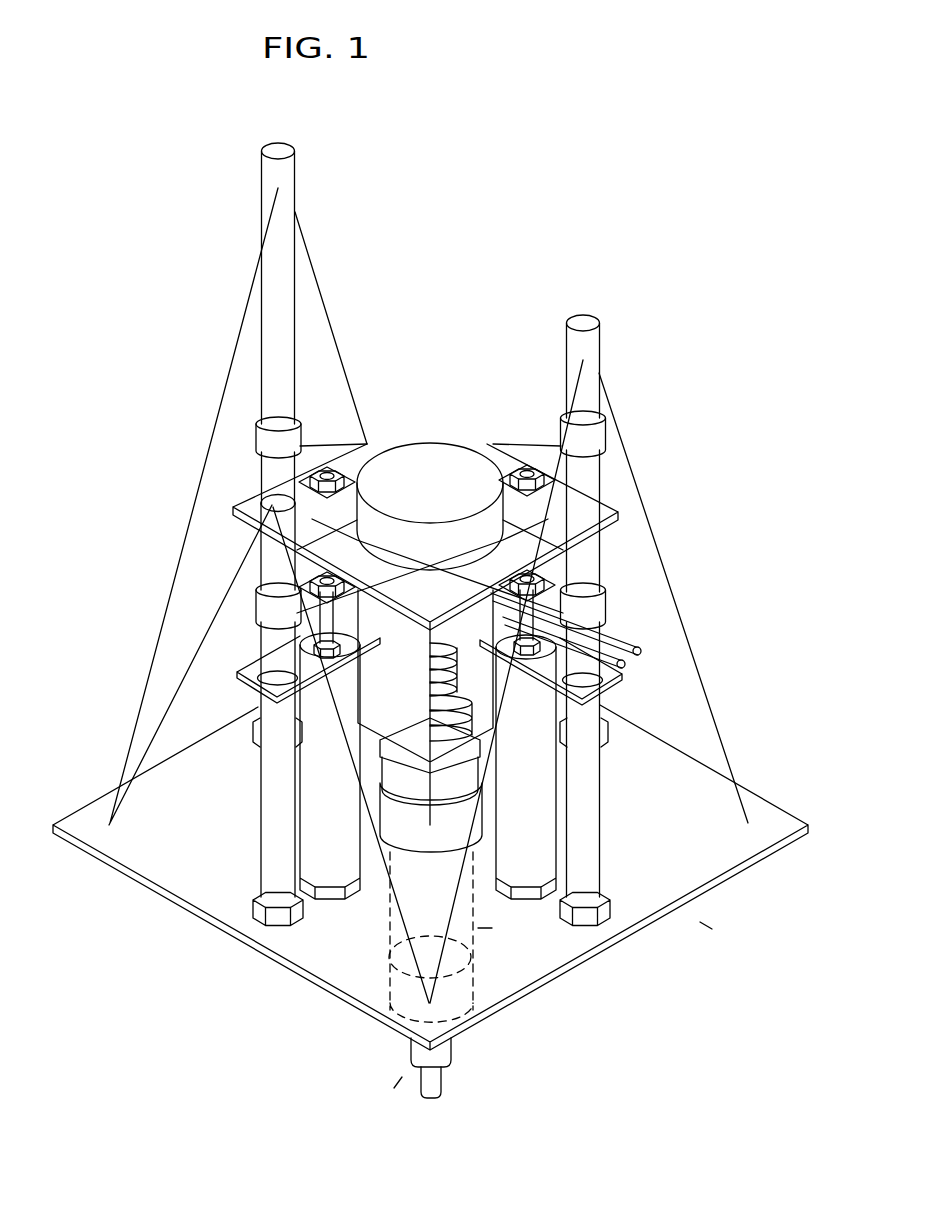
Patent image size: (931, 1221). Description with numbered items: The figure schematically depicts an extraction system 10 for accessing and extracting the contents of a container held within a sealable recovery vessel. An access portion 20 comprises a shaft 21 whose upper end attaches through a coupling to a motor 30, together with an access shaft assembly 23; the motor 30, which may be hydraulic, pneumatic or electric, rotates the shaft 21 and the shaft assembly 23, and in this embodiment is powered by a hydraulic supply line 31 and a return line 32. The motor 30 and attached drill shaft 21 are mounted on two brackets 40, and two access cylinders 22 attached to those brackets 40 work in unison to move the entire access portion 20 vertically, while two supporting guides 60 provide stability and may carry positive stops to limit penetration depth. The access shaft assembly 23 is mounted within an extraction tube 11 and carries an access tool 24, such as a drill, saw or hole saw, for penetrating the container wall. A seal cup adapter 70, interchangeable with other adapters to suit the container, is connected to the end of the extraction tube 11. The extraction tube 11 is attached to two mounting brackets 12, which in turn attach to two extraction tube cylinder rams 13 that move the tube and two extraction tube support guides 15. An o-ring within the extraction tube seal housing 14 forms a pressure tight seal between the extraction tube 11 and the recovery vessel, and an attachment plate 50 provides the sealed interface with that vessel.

The extraction system 10 is at (699, 921).
The extraction tube 11 is at (477, 928).
The mounting brackets 12 is at (490, 446).
The extraction tube cylinder rams 13 is at (317, 753).
The extraction tube seal housing 14 is at (433, 832).
The extraction tube support guides 15 is at (259, 576).
The access portion 20 is at (403, 1076).
The shaft 21 is at (454, 627).
The access cylinders 22 is at (552, 780).
The access shaft assembly 23 is at (455, 1048).
The access tool 24 is at (449, 1086).
The motor 30 is at (430, 444).
The hydraulic supply line 31 is at (647, 655).
The return line 32 is at (629, 672).
The brackets 40 is at (366, 448).
The attachment plate 50 is at (812, 817).
The supporting guides 60 is at (597, 324).
The seal cup adapter 70 is at (477, 983).